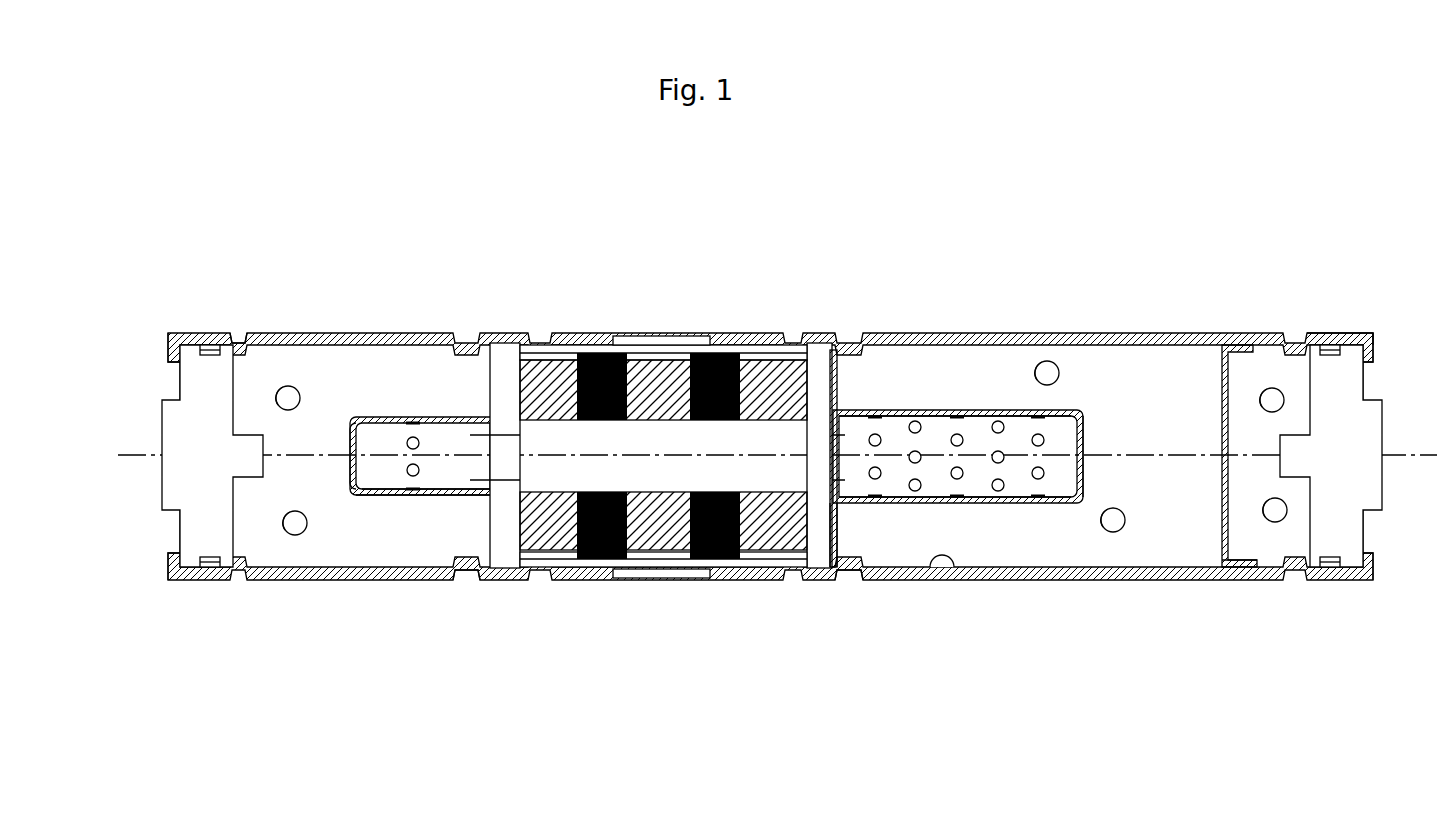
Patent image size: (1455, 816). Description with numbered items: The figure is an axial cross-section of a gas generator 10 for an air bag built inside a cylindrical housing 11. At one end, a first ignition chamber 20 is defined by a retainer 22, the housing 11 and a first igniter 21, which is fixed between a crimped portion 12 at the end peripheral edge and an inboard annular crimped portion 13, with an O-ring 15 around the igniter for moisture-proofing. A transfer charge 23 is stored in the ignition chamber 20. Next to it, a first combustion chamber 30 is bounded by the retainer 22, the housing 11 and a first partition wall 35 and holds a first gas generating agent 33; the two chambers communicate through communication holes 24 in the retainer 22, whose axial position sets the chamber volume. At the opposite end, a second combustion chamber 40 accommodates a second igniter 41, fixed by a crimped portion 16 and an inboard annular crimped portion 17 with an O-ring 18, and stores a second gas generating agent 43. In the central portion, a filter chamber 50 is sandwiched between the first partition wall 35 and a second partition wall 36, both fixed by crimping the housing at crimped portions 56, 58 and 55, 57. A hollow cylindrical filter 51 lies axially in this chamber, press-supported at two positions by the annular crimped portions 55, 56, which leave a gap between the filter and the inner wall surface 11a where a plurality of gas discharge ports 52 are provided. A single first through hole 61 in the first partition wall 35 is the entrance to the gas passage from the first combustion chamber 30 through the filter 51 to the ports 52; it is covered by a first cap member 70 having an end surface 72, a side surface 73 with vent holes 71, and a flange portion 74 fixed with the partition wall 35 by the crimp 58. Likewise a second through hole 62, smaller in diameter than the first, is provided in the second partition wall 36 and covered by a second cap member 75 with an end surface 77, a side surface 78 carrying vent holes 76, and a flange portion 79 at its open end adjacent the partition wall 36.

The stepping motor 10 is at (753, 291).
The cylindrical housing 11 is at (1010, 333).
The inner wall surface 11a is at (945, 575).
The crimped portion 12 is at (1373, 563).
The inboard annular crimped portion 13 is at (1300, 581).
The O-ring 15 is at (1330, 338).
The crimped portion 16 is at (170, 565).
The inboard annular crimped portion 17 is at (243, 334).
The O-ring 18 is at (210, 580).
The first ignition chamber 20 is at (1236, 463).
The first igniter 21 is at (1359, 445).
The retainer 22 is at (1218, 580).
The transfer charge 23 is at (1268, 520).
The communication holes 24 is at (1221, 392).
The first combustion chamber 30 is at (1080, 519).
The first gas generating agent 33 is at (1107, 533).
The first partition wall 35 is at (820, 571).
The second partition wall 36 is at (657, 412).
The second combustion chamber 40 is at (329, 504).
The second igniter 41 is at (222, 445).
The second gas generating agent 43 is at (294, 536).
The filter chamber 50 is at (663, 466).
The hollow cylindrical filter 51 is at (549, 552).
The gas discharge ports 52 is at (660, 340).
The annular crimped portion 55 is at (540, 345).
The annular crimped portion 56 is at (775, 580).
The crimped portion 57 is at (470, 583).
The crimped portion 58 is at (855, 583).
The first through hole 61 is at (838, 420).
The second through hole 62 is at (510, 445).
The first cap member 70 is at (1004, 512).
The vent holes 71 is at (950, 505).
The end surface 72 is at (1085, 478).
The side surface 73 is at (930, 411).
The flange portion 74 is at (838, 528).
The second cap member 75 is at (363, 502).
The vent holes 76 is at (412, 494).
The end surface 77 is at (349, 432).
The side surface 78 is at (383, 506).
The flange portion 79 is at (490, 525).